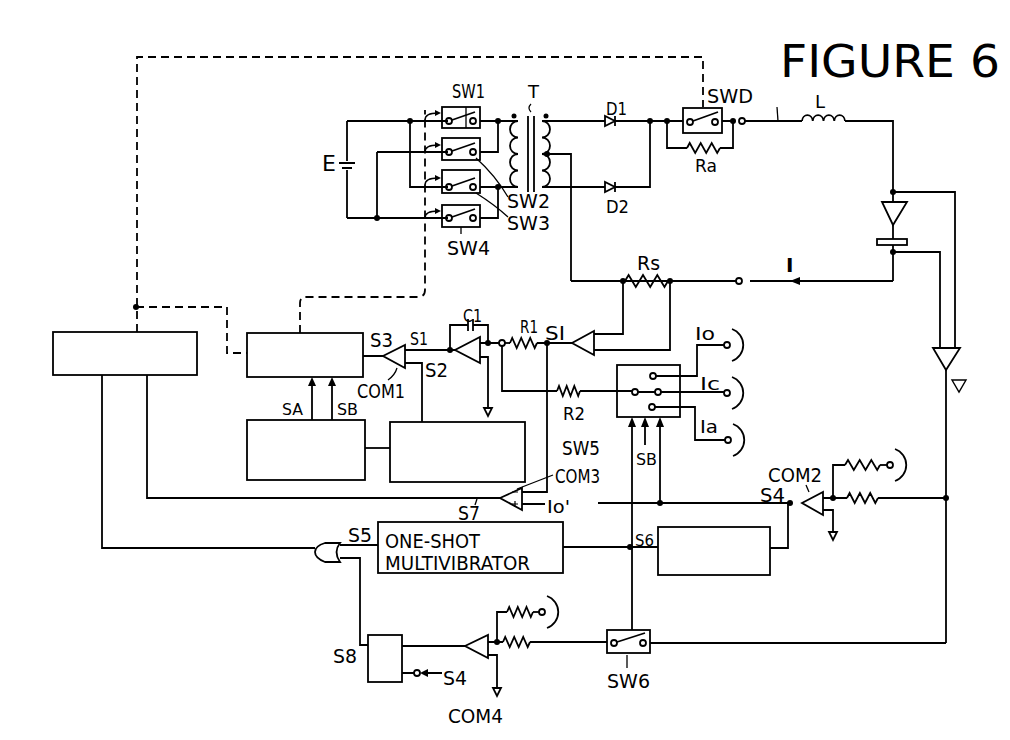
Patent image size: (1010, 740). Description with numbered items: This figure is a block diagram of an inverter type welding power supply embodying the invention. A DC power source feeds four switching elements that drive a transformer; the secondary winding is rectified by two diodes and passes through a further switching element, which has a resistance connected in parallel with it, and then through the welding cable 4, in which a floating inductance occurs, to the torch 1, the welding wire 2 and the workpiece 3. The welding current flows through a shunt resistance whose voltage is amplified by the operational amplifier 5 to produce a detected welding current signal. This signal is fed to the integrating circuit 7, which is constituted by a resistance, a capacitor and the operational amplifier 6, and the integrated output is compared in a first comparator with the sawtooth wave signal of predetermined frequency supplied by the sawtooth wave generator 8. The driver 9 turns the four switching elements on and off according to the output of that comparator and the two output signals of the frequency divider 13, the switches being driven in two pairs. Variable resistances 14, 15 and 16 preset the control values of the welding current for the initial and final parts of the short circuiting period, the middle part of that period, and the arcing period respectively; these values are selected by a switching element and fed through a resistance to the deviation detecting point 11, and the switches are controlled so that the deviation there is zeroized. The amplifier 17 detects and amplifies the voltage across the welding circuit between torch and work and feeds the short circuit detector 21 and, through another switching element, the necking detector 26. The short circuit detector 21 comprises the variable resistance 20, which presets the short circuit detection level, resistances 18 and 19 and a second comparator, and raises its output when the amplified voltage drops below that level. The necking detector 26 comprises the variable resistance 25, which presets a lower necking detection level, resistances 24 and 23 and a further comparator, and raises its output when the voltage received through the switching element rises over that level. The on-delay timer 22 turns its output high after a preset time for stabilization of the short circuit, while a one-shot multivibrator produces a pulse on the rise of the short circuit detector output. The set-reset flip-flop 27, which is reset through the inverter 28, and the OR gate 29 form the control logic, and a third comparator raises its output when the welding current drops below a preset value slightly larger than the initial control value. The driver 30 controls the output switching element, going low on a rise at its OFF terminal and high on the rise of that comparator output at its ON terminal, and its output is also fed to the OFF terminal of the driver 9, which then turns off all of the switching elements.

The torch 1 is at (882, 204).
The welding wire 2 is at (895, 230).
The workpiece 3 is at (910, 243).
The welding cable 4 is at (779, 103).
The operational amplifier 5 is at (583, 331).
The operational amplifier 6 is at (472, 360).
The integrating circuit 7 is at (512, 310).
The sawtooth wave generator 8 is at (502, 422).
The driver 9 is at (317, 333).
The deviation detecting point 11 is at (504, 346).
The frequency divider 13 is at (247, 442).
The variable resistance 14 is at (740, 329).
The variable resistance 15 is at (742, 378).
The variable resistance 16 is at (742, 426).
The amplifier 17 is at (960, 355).
The resistance 18 is at (866, 506).
The resistance 19 is at (860, 462).
The variable resistance 20 is at (895, 452).
The short circuit detector 21 is at (889, 466).
The on-delay timer 22 is at (772, 565).
The resistance 23 is at (522, 650).
The resistance 24 is at (515, 610).
The variable resistance 25 is at (560, 607).
The necking detector 26 is at (551, 653).
The set-reset flip-flop 27 is at (392, 635).
The inverter 28 is at (421, 677).
The OR gate 29 is at (328, 542).
The driver 30 is at (168, 333).